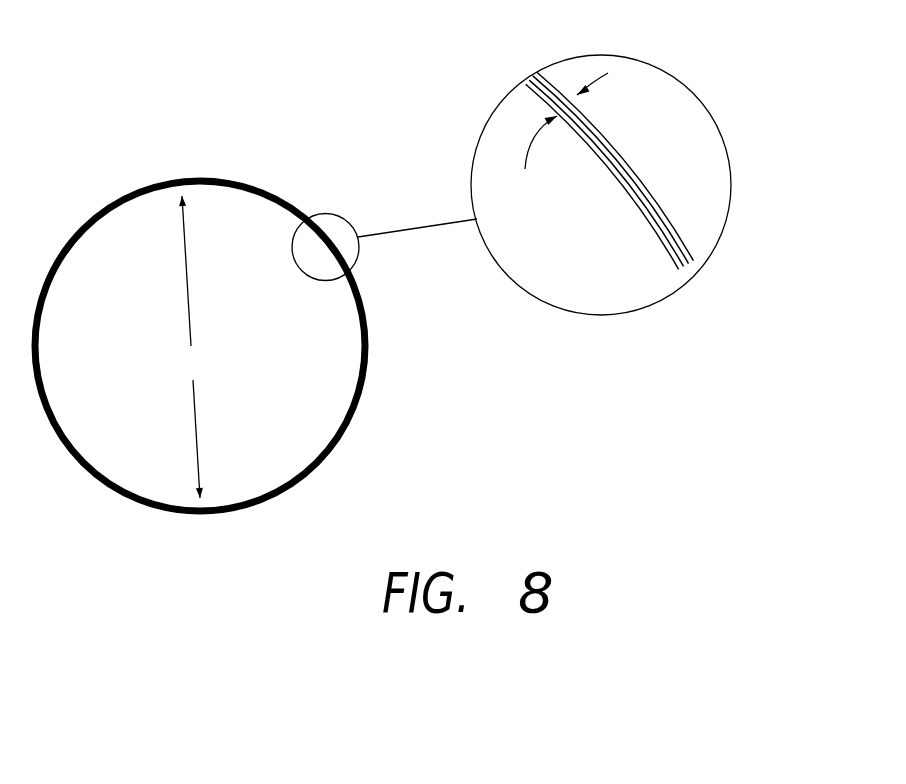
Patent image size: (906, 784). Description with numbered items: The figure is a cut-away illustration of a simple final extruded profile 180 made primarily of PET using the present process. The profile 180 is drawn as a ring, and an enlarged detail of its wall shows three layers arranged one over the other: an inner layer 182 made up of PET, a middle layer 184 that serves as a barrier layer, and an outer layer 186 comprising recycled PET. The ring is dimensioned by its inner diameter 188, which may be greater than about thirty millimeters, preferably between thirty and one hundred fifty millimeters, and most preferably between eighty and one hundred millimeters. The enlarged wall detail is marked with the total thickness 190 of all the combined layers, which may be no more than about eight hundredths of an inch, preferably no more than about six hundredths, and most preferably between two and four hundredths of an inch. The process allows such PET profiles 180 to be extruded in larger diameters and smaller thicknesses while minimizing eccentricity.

The extruded profile 180 is at (98, 132).
The inner layer 182 is at (680, 273).
The middle layer 184 is at (533, 77).
The outer layer 186 is at (697, 257).
The inner diameter 188 is at (192, 347).
The total thickness 190 is at (555, 138).